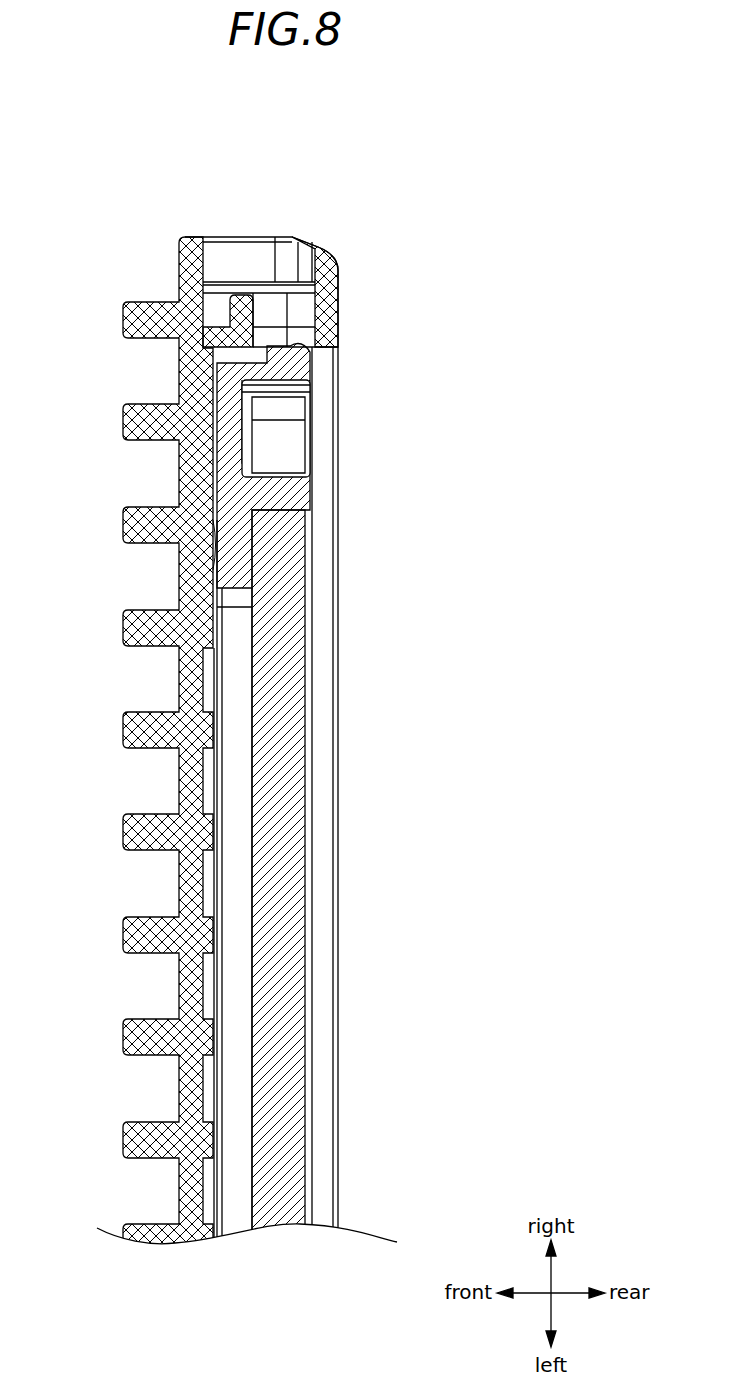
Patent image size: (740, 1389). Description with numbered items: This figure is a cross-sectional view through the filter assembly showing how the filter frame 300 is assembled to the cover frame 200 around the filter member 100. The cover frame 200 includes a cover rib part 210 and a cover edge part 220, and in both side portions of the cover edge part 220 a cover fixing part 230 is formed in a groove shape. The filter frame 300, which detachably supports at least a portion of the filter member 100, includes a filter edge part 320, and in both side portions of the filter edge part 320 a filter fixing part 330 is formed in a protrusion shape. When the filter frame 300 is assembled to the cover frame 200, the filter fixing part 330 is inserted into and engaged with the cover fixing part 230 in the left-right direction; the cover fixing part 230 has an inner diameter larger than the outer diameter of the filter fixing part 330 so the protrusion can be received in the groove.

The filter member 100 is at (220, 779).
The cover frame 200 is at (230, 748).
The cover rib part 210 is at (107, 565).
The cover edge part 220 is at (182, 577).
The cover fixing part 230 is at (303, 316).
The filter frame 300 is at (344, 466).
The filter edge part 320 is at (300, 388).
The filter fixing part 330 is at (298, 352).